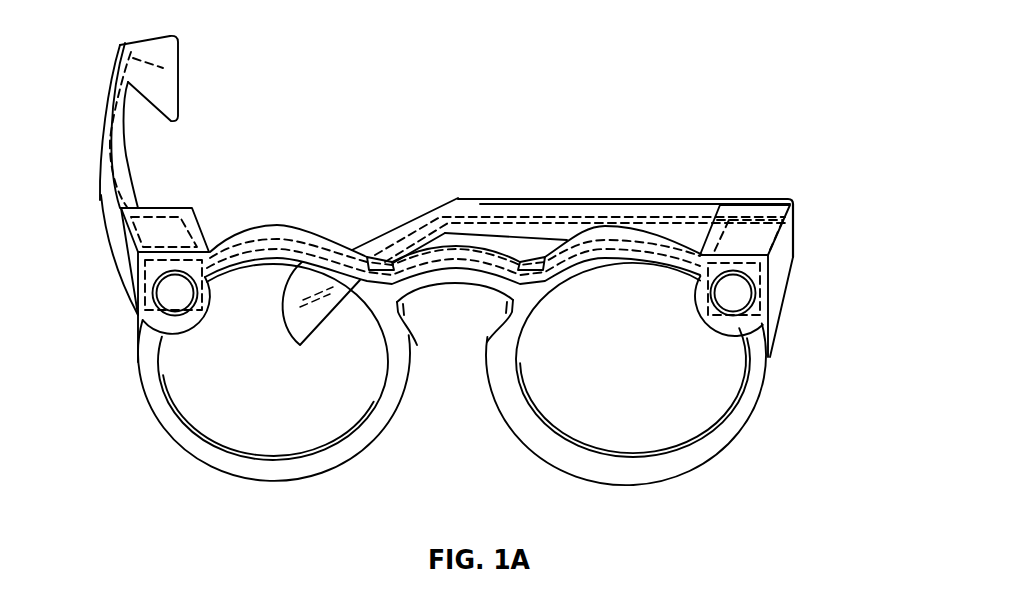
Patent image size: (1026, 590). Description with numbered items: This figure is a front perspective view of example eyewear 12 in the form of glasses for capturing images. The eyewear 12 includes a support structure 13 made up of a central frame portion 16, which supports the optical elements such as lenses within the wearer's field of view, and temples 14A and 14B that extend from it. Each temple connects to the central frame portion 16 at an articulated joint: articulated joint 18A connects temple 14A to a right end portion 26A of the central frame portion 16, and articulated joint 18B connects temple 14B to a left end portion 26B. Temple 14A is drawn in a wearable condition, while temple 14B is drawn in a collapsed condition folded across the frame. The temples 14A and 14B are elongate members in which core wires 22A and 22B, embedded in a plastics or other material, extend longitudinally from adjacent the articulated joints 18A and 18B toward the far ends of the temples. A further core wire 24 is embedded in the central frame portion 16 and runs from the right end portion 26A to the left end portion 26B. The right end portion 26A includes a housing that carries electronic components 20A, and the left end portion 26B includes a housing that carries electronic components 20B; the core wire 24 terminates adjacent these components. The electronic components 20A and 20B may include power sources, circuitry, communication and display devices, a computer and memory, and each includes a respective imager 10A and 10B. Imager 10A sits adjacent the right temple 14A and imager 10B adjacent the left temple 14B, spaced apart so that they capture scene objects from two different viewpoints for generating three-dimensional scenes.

The imager 10A is at (169, 302).
The imager 10B is at (735, 302).
The eyewear 12 is at (570, 478).
The support structure 13 is at (442, 247).
The temple 14A is at (197, 76).
The temple 14B is at (635, 195).
The central frame portion 16 is at (740, 440).
The articulated joint 18A is at (201, 216).
The articulated joint 18B is at (815, 204).
The electronic components 20A is at (125, 261).
The electronic components 20B is at (780, 258).
The core wire 22A is at (133, 48).
The core wire 22B is at (548, 214).
The core wire 24 is at (421, 289).
The right end portion 26A is at (181, 189).
The left end portion 26B is at (823, 172).